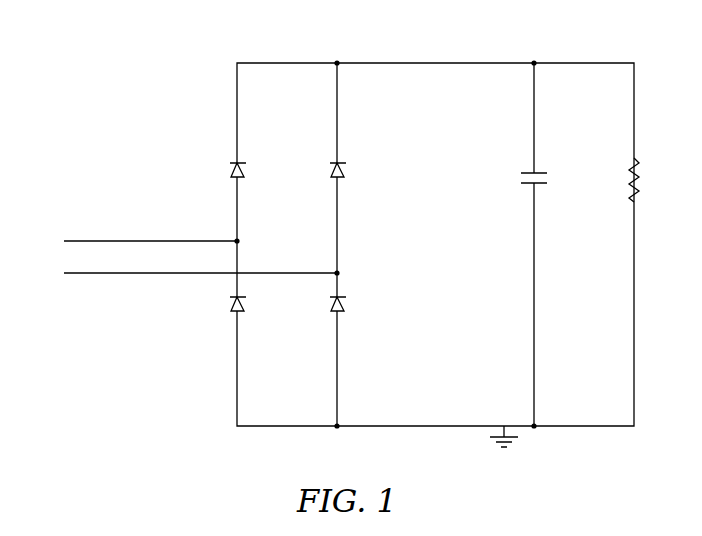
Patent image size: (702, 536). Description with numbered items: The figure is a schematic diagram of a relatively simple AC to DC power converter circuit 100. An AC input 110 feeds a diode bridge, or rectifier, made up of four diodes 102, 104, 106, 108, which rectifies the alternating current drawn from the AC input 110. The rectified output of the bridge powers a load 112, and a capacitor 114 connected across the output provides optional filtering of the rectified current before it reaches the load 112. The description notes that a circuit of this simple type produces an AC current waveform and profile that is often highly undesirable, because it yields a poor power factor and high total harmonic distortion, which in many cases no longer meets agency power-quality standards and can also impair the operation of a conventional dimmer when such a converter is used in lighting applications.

The circuit 100 is at (121, 69).
The AC input 110 is at (89, 219).
The diode 102 is at (232, 179).
The diode 104 is at (332, 179).
The diode 106 is at (232, 313).
The diode 108 is at (332, 313).
The capacitor 114 is at (530, 186).
The load 112 is at (632, 203).